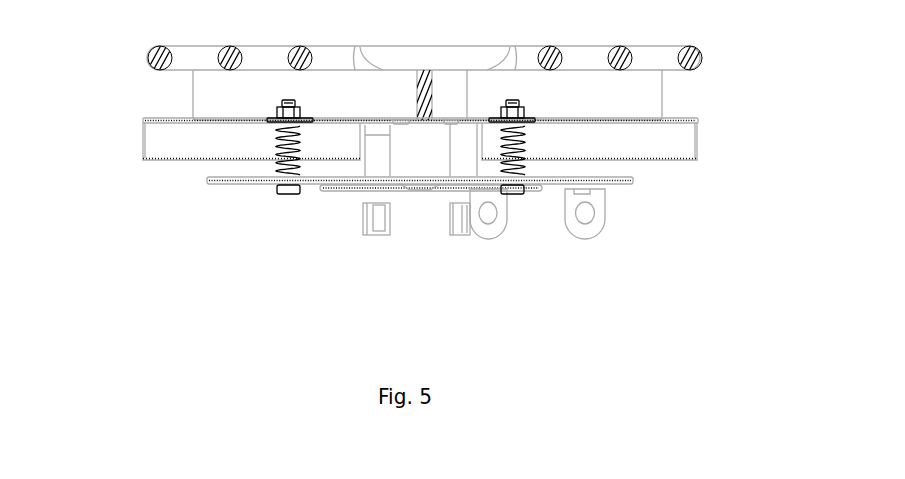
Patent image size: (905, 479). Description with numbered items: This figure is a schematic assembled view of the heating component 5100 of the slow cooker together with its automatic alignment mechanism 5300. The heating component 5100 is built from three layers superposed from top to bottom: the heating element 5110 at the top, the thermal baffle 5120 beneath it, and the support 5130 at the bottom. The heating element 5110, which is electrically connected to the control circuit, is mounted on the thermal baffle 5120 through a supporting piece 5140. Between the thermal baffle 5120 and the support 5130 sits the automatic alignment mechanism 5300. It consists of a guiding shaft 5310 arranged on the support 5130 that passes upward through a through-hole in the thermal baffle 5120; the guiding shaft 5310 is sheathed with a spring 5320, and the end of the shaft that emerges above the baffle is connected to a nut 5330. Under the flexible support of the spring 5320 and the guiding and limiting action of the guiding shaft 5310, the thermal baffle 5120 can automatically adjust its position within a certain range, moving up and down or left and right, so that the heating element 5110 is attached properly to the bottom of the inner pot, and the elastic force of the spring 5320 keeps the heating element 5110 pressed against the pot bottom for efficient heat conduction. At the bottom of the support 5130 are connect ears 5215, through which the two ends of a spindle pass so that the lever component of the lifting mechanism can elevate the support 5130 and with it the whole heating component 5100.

The heating component 5100 is at (484, 115).
The heating element 5110 is at (695, 58).
The supporting piece 5140 is at (661, 98).
The thermal baffle 5120 is at (697, 130).
The support 5130 is at (487, 175).
The connect ear 5215 is at (592, 230).
The automatic alignment mechanism 5300 is at (278, 141).
The nut 5330 is at (277, 110).
The guiding shaft 5310 is at (281, 145).
The spring 5320 is at (278, 173).